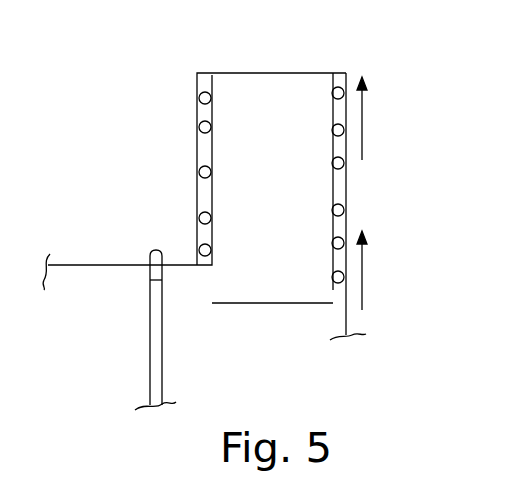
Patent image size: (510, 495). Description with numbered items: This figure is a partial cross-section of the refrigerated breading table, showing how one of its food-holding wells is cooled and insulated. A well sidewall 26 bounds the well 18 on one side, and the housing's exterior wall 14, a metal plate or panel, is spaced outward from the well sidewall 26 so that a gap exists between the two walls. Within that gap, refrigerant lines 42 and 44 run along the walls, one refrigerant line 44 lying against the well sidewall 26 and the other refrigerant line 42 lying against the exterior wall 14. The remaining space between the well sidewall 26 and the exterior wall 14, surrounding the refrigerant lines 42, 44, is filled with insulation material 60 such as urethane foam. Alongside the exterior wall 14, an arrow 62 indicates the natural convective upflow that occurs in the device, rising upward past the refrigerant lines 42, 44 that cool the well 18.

The well 18 is at (129, 191).
The well sidewall 26 is at (196, 88).
The insulation material 60 is at (270, 282).
The refrigerant line 44 is at (209, 120).
The exterior wall 14 is at (346, 178).
The refrigerant line 42 is at (328, 113).
The arrow 62 is at (363, 268).